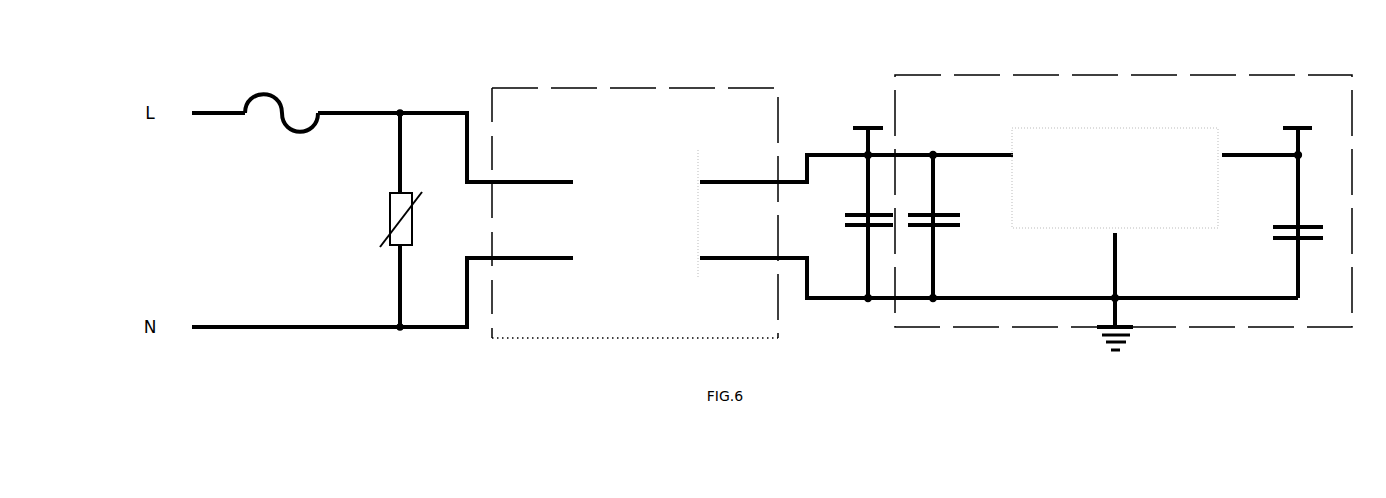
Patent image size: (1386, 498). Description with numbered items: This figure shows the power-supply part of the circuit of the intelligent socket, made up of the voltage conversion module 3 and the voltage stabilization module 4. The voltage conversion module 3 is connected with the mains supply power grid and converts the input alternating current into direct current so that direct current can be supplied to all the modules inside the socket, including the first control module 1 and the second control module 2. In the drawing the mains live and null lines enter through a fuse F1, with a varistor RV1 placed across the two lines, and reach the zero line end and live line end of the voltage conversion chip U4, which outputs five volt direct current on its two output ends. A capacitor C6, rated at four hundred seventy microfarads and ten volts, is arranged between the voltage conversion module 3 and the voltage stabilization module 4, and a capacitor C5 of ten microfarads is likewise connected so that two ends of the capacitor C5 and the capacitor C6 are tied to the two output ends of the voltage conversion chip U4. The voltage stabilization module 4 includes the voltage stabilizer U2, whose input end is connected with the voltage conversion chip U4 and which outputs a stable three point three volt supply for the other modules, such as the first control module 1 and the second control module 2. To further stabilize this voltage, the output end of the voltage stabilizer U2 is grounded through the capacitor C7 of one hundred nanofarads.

The voltage conversion module 3 is at (585, 88).
The voltage stabilization module 4 is at (1100, 72).
The first control module 1 is at (533, 178).
The second control module 2 is at (532, 254).
The fuse F1 is at (295, 118).
The varistor RV1 is at (371, 221).
The voltage conversion chip U4 is at (882, 216).
The voltage stabilizer U2 is at (1131, 215).
The capacitor C5 is at (944, 226).
The capacitor C6 is at (858, 204).
The capacitor C7 is at (1304, 204).